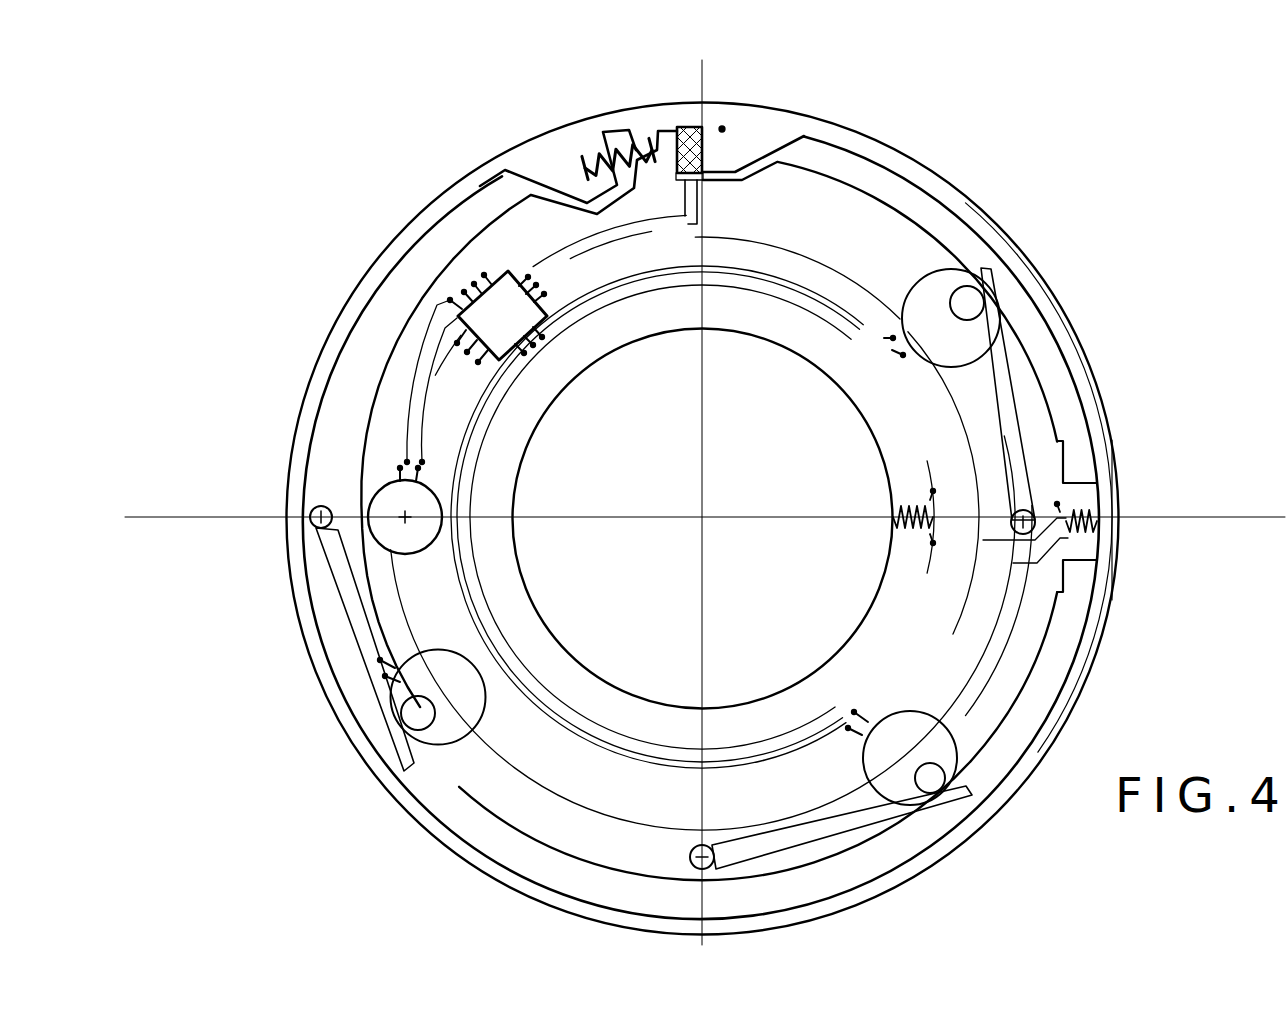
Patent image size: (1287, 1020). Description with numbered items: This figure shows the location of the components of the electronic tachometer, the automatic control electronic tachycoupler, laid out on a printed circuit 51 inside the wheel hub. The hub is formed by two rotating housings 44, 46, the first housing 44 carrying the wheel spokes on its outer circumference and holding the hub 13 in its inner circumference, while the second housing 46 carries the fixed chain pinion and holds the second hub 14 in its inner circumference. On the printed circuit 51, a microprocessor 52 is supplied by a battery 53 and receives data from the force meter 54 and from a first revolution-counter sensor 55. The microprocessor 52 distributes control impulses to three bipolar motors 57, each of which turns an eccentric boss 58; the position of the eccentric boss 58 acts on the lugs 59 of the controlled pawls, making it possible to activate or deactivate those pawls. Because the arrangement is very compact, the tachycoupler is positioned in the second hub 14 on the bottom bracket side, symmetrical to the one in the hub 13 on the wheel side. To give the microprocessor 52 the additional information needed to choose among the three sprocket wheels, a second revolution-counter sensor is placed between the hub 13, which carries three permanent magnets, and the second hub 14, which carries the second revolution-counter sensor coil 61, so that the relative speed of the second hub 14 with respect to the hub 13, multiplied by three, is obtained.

The hub 13 is at (664, 150).
The second hub 14 is at (604, 130).
The first housing 44 is at (723, 126).
The second housing 46 is at (770, 135).
The printed circuit 51 is at (975, 615).
The microprocessor 52 is at (503, 318).
The battery 53 is at (410, 499).
The force meter 54 is at (714, 149).
The first revolution-counter sensor 55 is at (948, 513).
The bipolar motors 57 is at (948, 322).
The eccentric boss 58 is at (966, 303).
The lugs 59 is at (1005, 410).
The second revolution-counter sensor coil 61 is at (1116, 535).